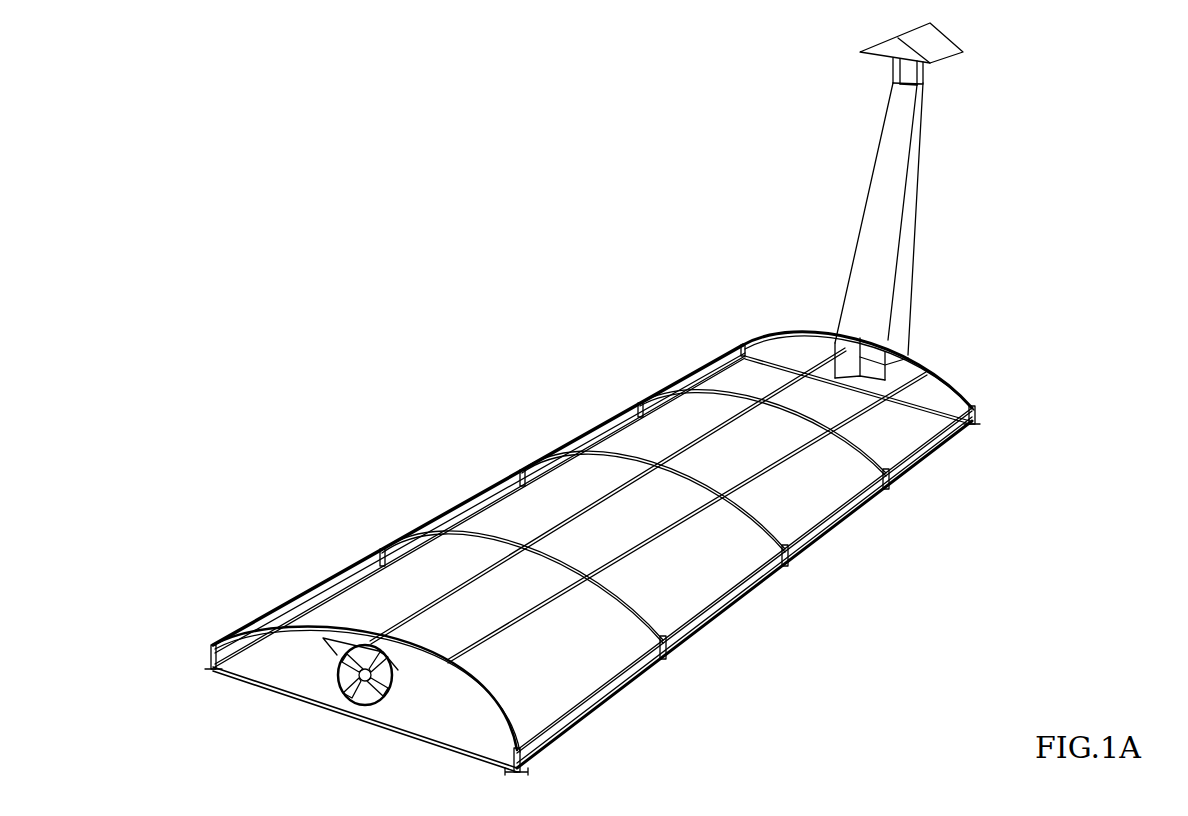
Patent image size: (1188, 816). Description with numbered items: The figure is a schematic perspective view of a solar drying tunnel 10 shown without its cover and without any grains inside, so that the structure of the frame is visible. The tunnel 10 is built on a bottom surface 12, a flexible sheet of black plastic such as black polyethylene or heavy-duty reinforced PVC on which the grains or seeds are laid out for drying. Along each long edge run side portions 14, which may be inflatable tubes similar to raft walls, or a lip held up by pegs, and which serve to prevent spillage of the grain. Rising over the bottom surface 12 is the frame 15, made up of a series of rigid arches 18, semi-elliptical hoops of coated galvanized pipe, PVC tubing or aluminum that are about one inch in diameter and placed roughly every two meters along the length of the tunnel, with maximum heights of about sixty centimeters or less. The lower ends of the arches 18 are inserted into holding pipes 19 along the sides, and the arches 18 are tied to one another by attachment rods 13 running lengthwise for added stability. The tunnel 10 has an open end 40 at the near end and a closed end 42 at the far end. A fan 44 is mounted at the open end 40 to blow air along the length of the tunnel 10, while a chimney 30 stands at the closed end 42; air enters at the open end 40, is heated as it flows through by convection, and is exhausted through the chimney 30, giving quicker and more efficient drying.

The solar drying tunnel 10 is at (600, 403).
The bottom surface 12 is at (427, 707).
The attachment rods 13 is at (710, 432).
The side portions 14 is at (343, 587).
The frame 15 is at (960, 358).
The arches 18 is at (573, 563).
The holding pipes 19 is at (797, 562).
The chimney 30 is at (918, 228).
The open end 40 is at (296, 662).
The closed end 42 is at (808, 350).
The fan 44 is at (353, 690).